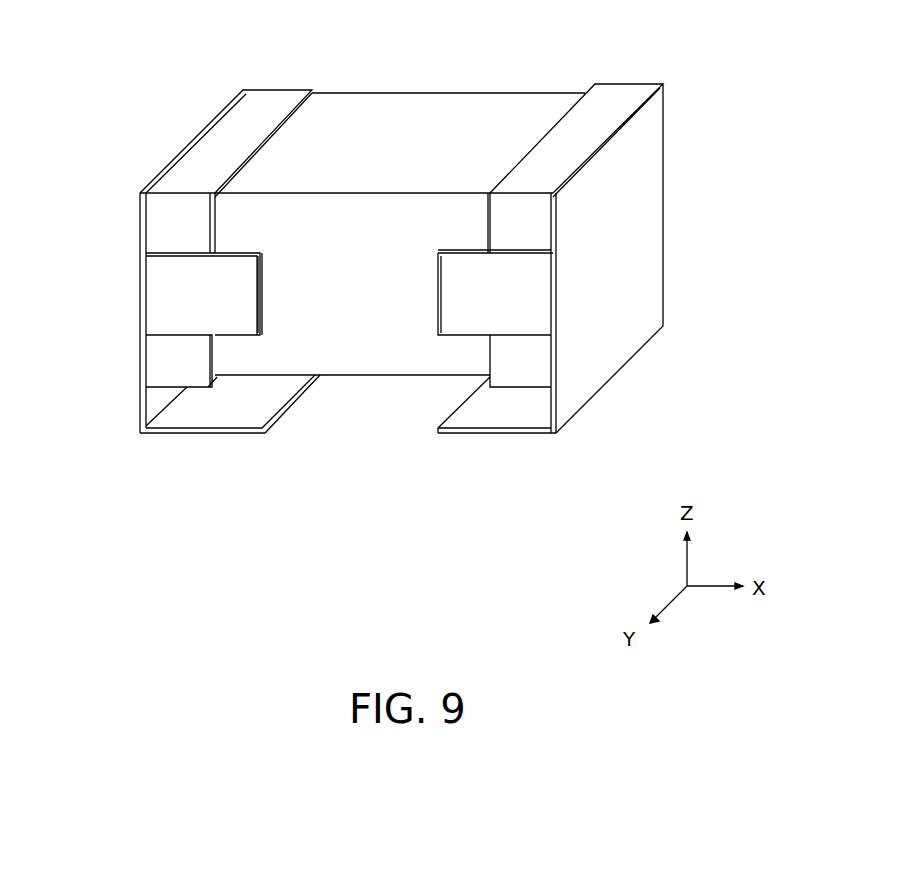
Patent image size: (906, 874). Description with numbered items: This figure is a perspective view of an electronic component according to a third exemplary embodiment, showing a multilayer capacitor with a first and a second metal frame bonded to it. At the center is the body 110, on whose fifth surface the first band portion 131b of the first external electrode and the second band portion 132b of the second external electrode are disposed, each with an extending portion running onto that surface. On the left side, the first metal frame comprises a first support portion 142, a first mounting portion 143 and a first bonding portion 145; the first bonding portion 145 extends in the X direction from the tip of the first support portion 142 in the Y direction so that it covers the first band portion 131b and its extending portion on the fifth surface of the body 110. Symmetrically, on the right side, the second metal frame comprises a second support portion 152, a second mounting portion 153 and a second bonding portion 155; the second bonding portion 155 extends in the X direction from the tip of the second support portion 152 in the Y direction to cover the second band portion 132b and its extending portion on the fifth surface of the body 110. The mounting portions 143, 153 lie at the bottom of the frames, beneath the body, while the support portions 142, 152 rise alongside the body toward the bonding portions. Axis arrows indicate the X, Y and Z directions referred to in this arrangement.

The body 110 is at (443, 103).
The first band portion 131b is at (262, 115).
The second band portion 132b is at (602, 115).
The first support portion 142 is at (158, 286).
The first mounting portion 143 is at (165, 436).
The first bonding portion 145 is at (240, 307).
The second support portion 152 is at (606, 265).
The second mounting portion 153 is at (537, 435).
The second bonding portion 155 is at (463, 307).